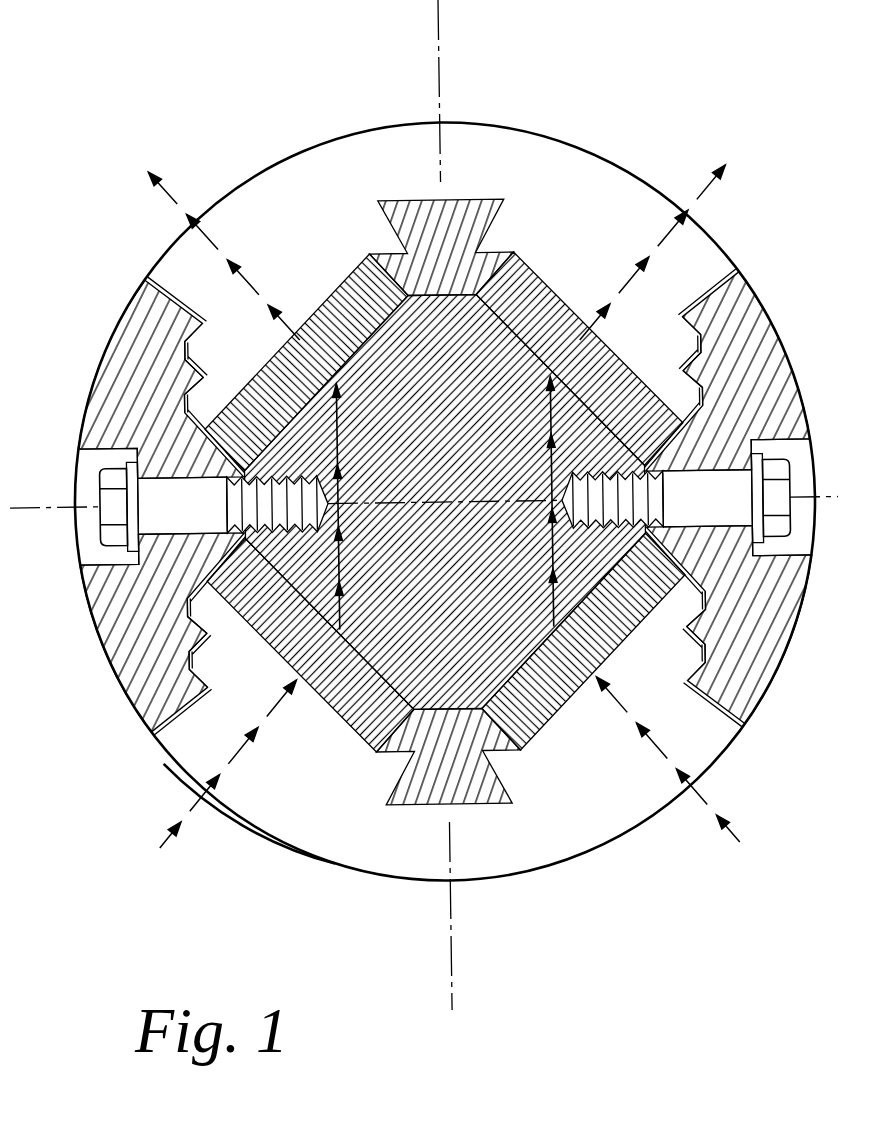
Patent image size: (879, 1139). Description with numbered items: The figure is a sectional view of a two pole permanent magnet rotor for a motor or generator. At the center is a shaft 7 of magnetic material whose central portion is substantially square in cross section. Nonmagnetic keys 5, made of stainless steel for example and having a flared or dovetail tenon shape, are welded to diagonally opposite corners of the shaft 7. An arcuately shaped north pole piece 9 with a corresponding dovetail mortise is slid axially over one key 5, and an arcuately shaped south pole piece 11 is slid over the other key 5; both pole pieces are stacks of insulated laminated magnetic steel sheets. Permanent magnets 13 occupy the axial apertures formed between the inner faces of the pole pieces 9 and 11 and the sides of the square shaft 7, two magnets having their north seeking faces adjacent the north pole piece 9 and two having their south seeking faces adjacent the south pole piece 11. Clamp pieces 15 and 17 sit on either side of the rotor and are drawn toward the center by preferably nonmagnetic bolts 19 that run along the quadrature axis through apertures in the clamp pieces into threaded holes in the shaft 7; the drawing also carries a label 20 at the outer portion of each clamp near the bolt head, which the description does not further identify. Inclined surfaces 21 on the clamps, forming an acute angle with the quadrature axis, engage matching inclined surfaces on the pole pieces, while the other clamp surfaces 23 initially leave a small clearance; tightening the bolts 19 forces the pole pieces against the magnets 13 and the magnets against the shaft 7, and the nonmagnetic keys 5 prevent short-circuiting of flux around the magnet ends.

The nonmagnetic key 5 is at (417, 195).
The shaft 7 is at (455, 608).
The north pole piece 9 is at (639, 188).
The south pole piece 11 is at (272, 830).
The permanent magnet 13 is at (356, 286).
The clamp piece 15 is at (115, 335).
The clamp piece 17 is at (762, 334).
The bolt 19 is at (100, 532).
The recess 20 is at (114, 565).
The inclined surface 21 is at (205, 330).
The other clamp surface 23 is at (180, 293).